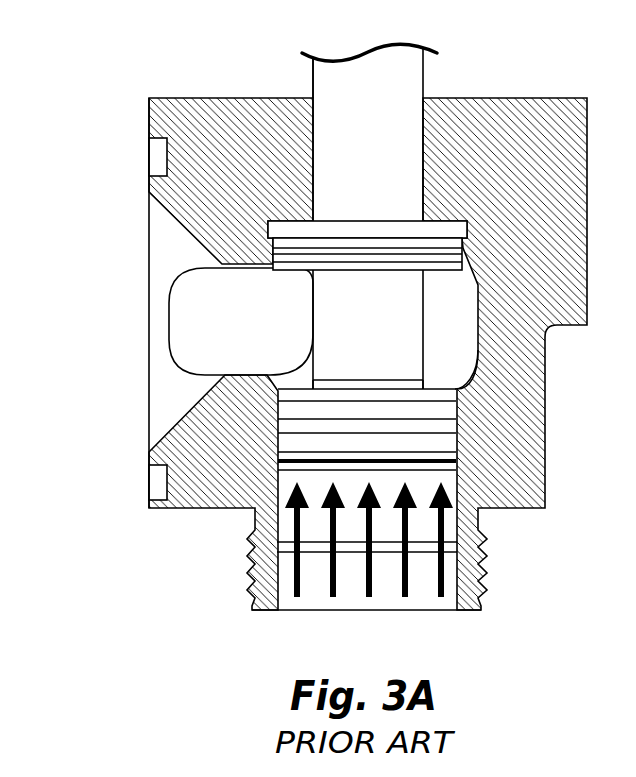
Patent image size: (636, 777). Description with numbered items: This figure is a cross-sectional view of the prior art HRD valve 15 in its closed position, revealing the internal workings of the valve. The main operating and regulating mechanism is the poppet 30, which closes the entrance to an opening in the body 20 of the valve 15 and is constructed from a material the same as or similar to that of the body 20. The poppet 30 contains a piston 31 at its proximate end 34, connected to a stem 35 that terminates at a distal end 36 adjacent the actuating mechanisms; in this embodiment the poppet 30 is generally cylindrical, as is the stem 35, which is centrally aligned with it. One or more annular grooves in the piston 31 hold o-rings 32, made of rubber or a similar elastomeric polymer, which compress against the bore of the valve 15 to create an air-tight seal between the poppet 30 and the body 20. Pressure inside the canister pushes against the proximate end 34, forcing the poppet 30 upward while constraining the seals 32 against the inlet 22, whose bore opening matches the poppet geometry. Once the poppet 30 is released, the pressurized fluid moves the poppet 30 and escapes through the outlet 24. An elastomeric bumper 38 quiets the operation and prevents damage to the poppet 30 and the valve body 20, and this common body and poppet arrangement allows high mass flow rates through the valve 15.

The valve 15 is at (562, 108).
The body 20 is at (190, 108).
The inlet 22 is at (420, 610).
The outlet 24 is at (148, 394).
The poppet 30 is at (423, 76).
The piston 31 is at (395, 445).
The o-rings 32 is at (395, 425).
The proximate end 34 is at (425, 384).
The stem 35 is at (313, 76).
The distal end 36 is at (366, 65).
The elastomeric bumper 38 is at (275, 226).